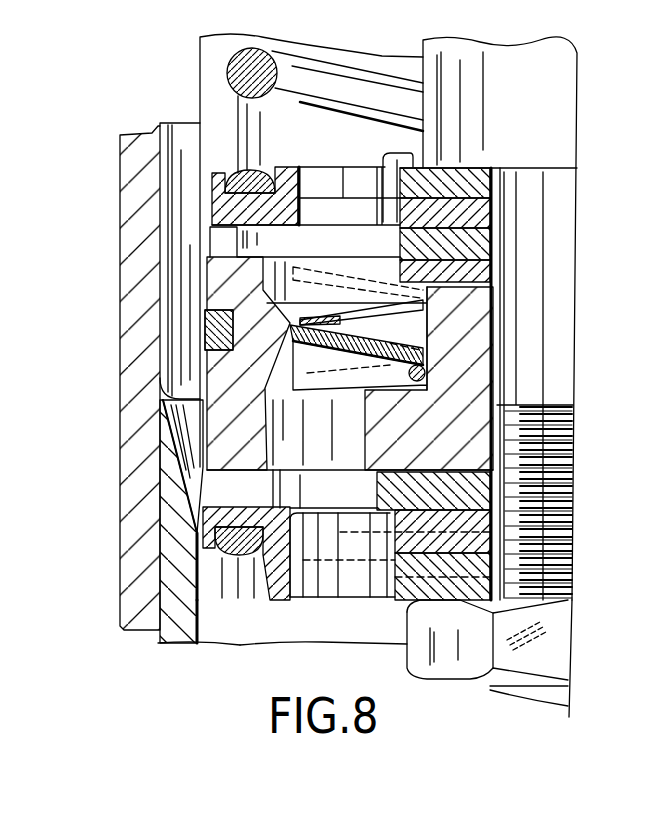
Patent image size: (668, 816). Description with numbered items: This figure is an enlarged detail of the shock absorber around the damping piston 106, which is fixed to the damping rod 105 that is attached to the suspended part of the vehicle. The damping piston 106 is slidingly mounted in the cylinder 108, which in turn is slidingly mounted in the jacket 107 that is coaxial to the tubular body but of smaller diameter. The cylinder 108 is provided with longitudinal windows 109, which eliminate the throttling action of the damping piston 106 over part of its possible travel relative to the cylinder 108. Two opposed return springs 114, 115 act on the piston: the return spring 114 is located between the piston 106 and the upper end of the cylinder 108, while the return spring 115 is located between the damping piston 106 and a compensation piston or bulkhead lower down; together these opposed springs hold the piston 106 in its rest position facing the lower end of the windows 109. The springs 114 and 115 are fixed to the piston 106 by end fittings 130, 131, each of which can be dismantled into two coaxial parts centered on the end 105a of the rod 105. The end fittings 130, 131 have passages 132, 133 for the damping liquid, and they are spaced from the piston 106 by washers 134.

The damping rod 105 is at (553, 137).
The end of rod 105a is at (552, 363).
The damping piston 106 is at (223, 412).
The jacket 107 is at (147, 339).
The cylinder 108 is at (160, 635).
The longitudinal windows 109 is at (210, 240).
The return spring 114 is at (227, 73).
The return spring 115 is at (212, 640).
The end fitting 130 is at (210, 226).
The end fitting 131 is at (227, 513).
The passage 132 is at (337, 180).
The passage 133 is at (330, 527).
The washer 134 is at (497, 243).